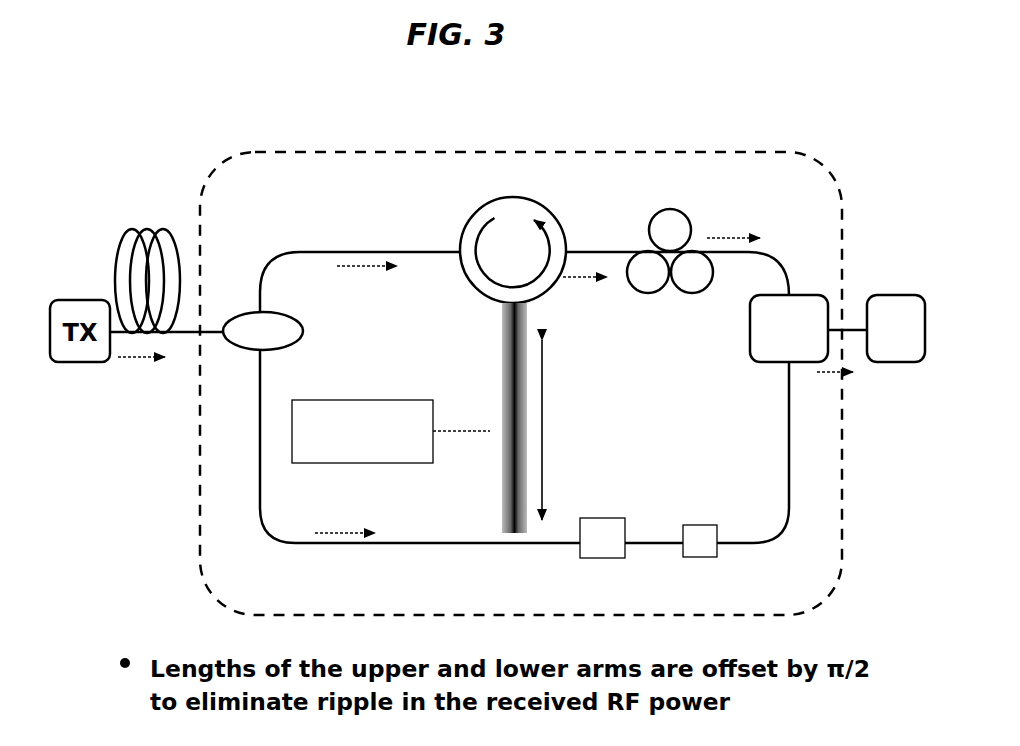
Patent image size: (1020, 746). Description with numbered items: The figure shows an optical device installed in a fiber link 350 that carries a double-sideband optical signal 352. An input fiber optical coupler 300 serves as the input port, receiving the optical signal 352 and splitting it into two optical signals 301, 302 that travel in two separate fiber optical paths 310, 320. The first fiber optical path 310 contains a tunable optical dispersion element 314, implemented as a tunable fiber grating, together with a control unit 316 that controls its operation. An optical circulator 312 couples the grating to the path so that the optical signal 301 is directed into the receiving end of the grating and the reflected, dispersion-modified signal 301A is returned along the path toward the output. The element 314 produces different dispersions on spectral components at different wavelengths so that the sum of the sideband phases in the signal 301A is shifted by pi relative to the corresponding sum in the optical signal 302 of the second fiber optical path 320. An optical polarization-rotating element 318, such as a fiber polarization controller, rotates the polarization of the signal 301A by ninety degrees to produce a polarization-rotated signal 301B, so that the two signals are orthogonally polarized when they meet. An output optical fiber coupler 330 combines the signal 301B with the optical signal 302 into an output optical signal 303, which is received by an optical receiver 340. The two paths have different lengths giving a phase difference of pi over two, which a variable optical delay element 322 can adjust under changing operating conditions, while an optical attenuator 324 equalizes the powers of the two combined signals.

The input fiber optical coupler 300 is at (285, 330).
The optical signal 301 is at (368, 268).
The dispersion-modified signal 301A is at (567, 280).
The polarization-rotated signal 301B is at (738, 238).
The optical signal 302 is at (342, 533).
The output optical signal 303 is at (838, 374).
The fiber optical path 310 is at (348, 225).
The optical circulator 312 is at (520, 228).
The tunable optical dispersion element 314 is at (495, 368).
The control unit 316 is at (364, 464).
The optical polarization-rotating element 318 is at (668, 225).
The fiber optical path 320 is at (427, 555).
The variable optical delay element 322 is at (600, 558).
The optical attenuator 324 is at (697, 557).
The output optical fiber coupler 330 is at (750, 340).
The optical receiver 340 is at (900, 328).
The fiber link 350 is at (113, 253).
The double-sideband optical signal 352 is at (143, 360).